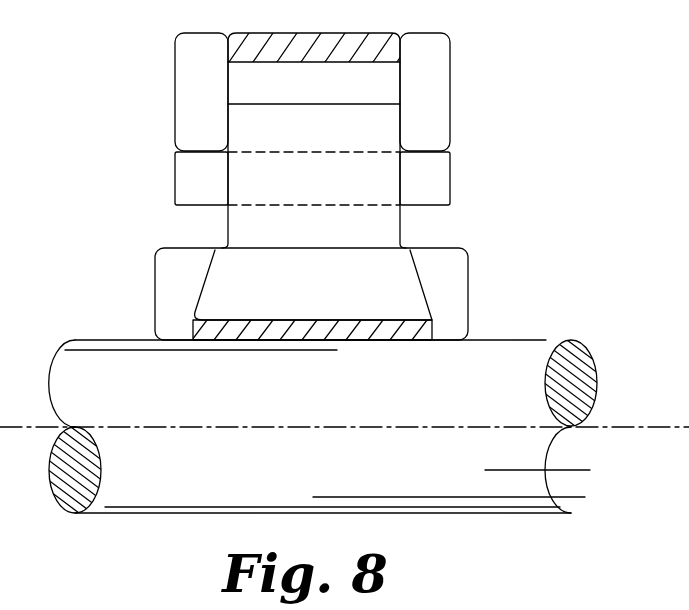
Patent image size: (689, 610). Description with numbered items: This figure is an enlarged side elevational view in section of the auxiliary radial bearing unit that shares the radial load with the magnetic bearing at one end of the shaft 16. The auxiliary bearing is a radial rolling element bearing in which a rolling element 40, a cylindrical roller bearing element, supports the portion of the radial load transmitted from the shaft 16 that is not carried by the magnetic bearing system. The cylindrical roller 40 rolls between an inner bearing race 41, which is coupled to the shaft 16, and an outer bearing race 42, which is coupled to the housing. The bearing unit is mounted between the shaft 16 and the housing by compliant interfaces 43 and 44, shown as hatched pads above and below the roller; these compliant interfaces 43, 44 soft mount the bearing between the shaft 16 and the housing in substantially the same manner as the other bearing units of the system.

The shaft 16 is at (534, 352).
The rolling element 40 is at (385, 237).
The inner bearing race 41 is at (413, 303).
The outer bearing race 42 is at (389, 87).
The compliant interface 43 is at (417, 328).
The compliant interface 44 is at (340, 33).